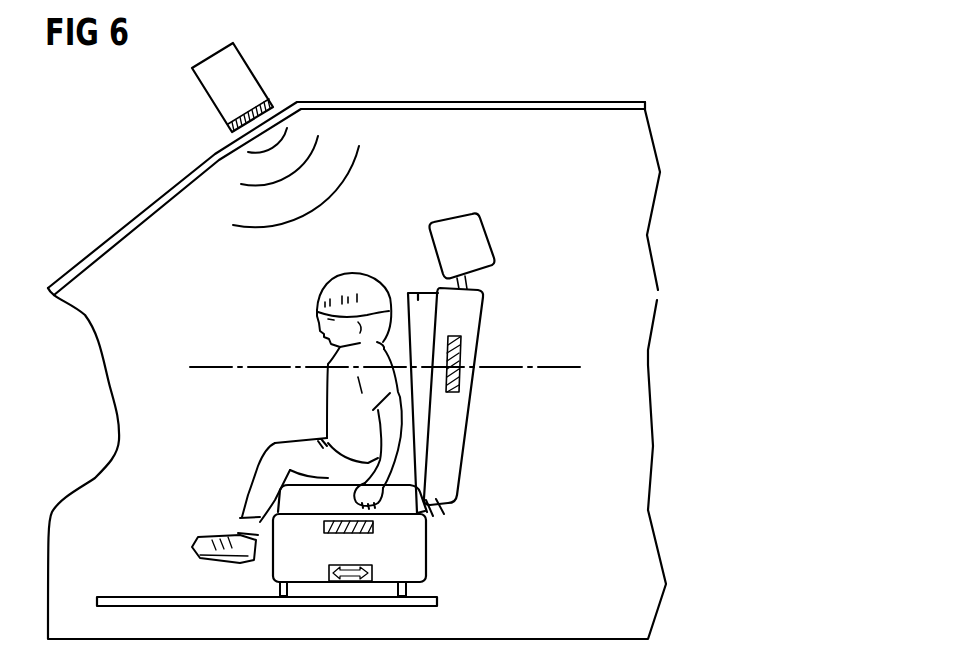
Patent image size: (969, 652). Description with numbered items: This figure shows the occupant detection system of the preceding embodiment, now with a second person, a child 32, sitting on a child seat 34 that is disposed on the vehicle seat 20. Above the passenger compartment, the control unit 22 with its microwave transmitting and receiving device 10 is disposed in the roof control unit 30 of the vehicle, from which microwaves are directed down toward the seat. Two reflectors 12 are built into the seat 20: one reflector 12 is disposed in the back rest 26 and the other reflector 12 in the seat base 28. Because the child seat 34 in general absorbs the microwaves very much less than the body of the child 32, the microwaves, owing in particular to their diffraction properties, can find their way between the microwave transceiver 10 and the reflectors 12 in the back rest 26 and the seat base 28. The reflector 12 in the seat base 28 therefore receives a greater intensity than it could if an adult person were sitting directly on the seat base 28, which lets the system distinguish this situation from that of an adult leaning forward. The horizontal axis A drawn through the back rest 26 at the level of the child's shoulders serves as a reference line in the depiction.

The microwave transmitting and receiving device 10 is at (273, 101).
The reflector 12 is at (457, 350).
The vehicle seat 20 is at (320, 410).
The control unit 22 is at (243, 70).
The back rest 26 is at (478, 306).
The seat base 28 is at (417, 545).
The roof control unit 30 is at (435, 102).
The child 32 is at (327, 410).
The child seat 34 is at (410, 288).
The axis A is at (206, 366).